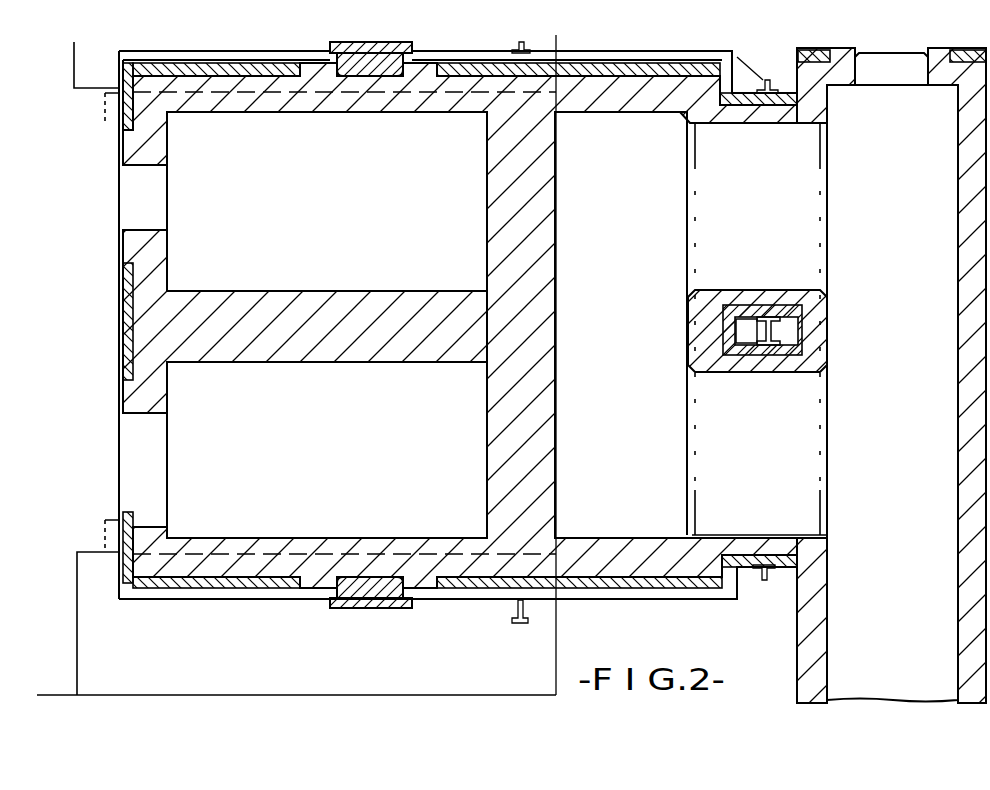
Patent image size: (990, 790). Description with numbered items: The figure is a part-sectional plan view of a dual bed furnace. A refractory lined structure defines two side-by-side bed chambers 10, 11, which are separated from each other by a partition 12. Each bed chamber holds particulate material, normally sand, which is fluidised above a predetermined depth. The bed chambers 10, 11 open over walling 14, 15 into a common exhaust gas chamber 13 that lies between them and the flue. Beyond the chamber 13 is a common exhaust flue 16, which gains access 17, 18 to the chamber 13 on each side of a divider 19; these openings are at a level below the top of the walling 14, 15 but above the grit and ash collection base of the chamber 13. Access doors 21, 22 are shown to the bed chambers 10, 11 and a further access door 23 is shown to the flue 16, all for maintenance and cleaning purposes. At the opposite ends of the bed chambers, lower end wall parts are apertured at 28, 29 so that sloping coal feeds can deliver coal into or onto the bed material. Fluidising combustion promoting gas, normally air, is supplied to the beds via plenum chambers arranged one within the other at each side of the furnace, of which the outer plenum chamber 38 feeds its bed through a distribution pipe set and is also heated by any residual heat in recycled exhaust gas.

The bed chamber 10 is at (357, 479).
The bed chamber 11 is at (333, 229).
The partition 12 is at (398, 342).
The common exhaust gas chamber 13 is at (636, 299).
The walling 14 is at (537, 518).
The walling 15 is at (538, 208).
The common exhaust flue 16 is at (903, 484).
The access 17 is at (772, 536).
The access 18 is at (765, 267).
The divider 19 is at (813, 333).
The access door 21 is at (365, 576).
The access door 22 is at (375, 78).
The access door 23 is at (895, 57).
The aperture 28 is at (133, 484).
The aperture 29 is at (133, 232).
The plenum chamber 38 is at (74, 55).